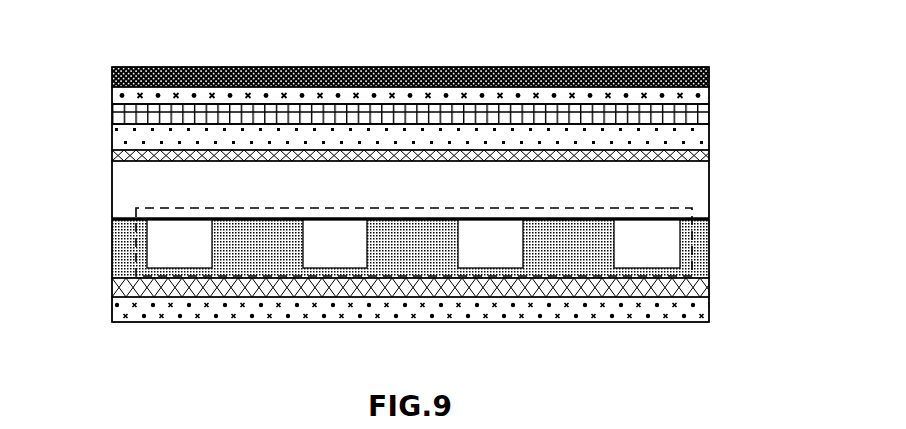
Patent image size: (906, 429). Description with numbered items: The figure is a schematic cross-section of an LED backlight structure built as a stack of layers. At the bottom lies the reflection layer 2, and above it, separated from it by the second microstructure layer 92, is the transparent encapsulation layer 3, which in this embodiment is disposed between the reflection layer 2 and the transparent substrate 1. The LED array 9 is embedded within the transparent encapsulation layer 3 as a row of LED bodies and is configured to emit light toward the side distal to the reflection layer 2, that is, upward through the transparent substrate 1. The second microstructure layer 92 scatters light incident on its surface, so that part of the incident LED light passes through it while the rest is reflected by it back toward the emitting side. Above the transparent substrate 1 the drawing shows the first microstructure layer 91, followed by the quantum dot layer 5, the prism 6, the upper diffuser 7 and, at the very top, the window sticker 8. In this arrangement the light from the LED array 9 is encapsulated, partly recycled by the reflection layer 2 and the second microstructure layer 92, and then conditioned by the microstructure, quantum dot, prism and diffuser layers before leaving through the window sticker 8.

The transparent substrate 1 is at (709, 200).
The reflection layer 2 is at (709, 313).
The transparent encapsulation layer 3 is at (709, 246).
The quantum dot layer 5 is at (709, 135).
The prism 6 is at (112, 107).
The upper diffuser 7 is at (709, 87).
The window sticker 8 is at (415, 66).
The LED array 9 is at (136, 245).
The first microstructure layer 91 is at (709, 154).
The second microstructure layer 92 is at (709, 288).